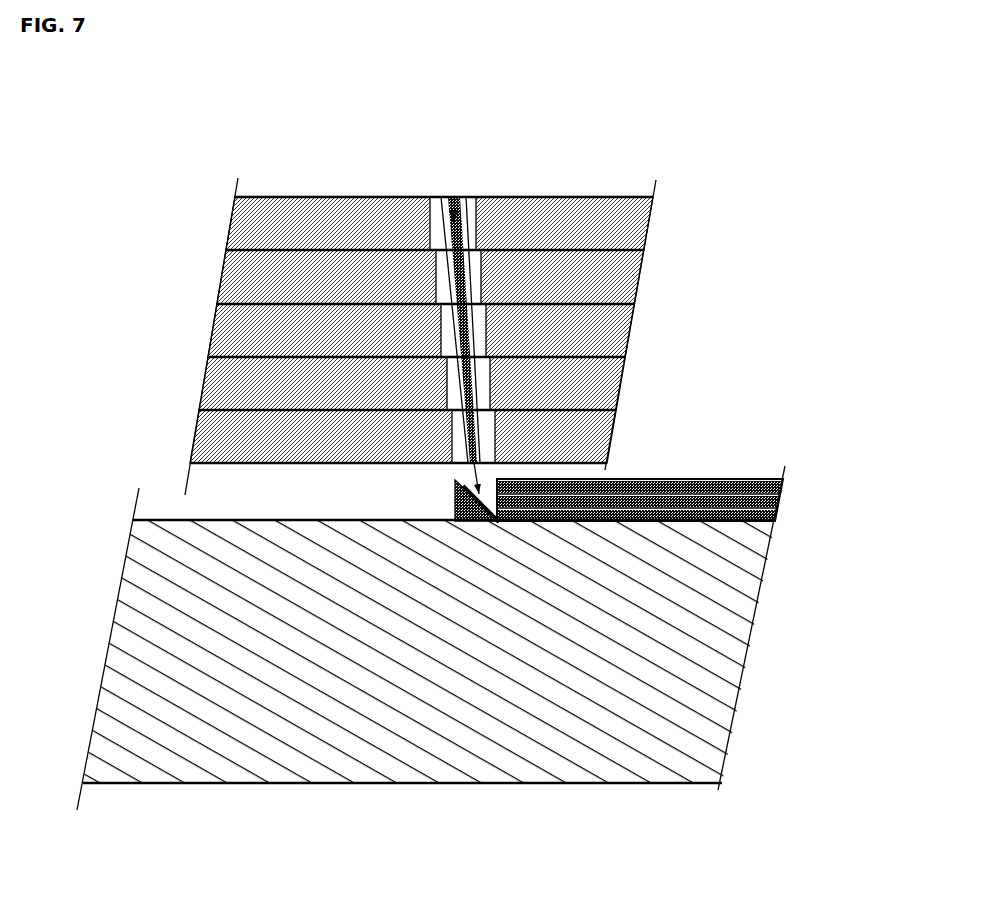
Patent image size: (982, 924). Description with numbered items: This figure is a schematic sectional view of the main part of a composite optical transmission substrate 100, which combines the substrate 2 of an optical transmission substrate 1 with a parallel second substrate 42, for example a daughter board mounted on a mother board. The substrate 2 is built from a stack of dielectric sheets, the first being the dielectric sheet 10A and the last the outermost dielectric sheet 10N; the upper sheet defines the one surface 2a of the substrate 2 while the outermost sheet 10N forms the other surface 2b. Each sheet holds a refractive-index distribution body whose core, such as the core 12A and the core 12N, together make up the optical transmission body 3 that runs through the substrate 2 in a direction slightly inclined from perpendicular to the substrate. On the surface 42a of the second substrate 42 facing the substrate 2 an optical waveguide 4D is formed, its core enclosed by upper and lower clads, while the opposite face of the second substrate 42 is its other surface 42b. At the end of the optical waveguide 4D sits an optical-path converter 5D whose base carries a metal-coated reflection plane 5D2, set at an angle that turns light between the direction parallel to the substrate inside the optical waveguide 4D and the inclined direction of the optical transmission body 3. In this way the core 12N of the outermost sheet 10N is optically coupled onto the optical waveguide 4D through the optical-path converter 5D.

The composite optical transmission substrate 100 is at (149, 147).
The optical transmission substrate 1 is at (530, 163).
The substrate 2 is at (373, 196).
The one surface of the substrate 2a is at (319, 196).
The other surface of the substrate 2b is at (340, 464).
The optical transmission body 3 is at (488, 331).
The dielectric sheet 10A is at (588, 222).
The core of the refractive-index distribution body 12A is at (458, 241).
The outermost dielectric sheet 10N is at (583, 424).
The core of the refractive-index distribution body 12N is at (482, 440).
The optical waveguide 4D is at (800, 483).
The optical-path converter 5D is at (452, 508).
The reflection plane 5D2 is at (505, 522).
The second substrate 42 is at (393, 785).
The one surface of the second substrate 42a is at (262, 519).
The other surface of the second substrate 42b is at (239, 783).